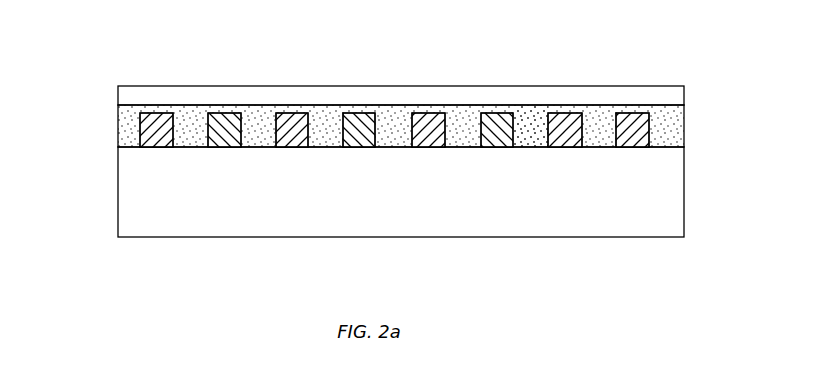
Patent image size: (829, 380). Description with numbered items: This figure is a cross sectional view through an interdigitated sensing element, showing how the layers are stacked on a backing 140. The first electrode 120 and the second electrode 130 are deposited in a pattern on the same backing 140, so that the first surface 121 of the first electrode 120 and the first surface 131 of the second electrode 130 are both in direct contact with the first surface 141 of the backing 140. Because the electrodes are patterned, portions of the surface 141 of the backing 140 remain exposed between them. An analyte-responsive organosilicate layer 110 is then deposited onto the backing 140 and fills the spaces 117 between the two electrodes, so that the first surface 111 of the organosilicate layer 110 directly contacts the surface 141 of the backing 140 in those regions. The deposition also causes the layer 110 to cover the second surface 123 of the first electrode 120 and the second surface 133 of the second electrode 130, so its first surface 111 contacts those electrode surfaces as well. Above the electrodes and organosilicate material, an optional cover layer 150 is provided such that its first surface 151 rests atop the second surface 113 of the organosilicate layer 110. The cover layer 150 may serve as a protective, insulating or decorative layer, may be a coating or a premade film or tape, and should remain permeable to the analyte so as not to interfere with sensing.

The analyte-responsive organosilicate layer 110 is at (670, 121).
The first surface of the analyte-responsive organosilicate layer 111 is at (607, 148).
The second surface of the analyte-responsive organosilicate layer 113 is at (424, 110).
The spaces 117 is at (273, 147).
The first electrode 120 is at (158, 116).
The first surface of first electrode 121 is at (563, 112).
The second surface of the first electrode 123 is at (593, 112).
The second electrode 130 is at (229, 116).
The first surface of second electrode 131 is at (490, 112).
The second surface of the second electrode 133 is at (517, 112).
The backing 140 is at (140, 218).
The first surface of backing 141 is at (129, 151).
The cover layer 150 is at (139, 90).
The first surface of cover layer 151 is at (130, 101).